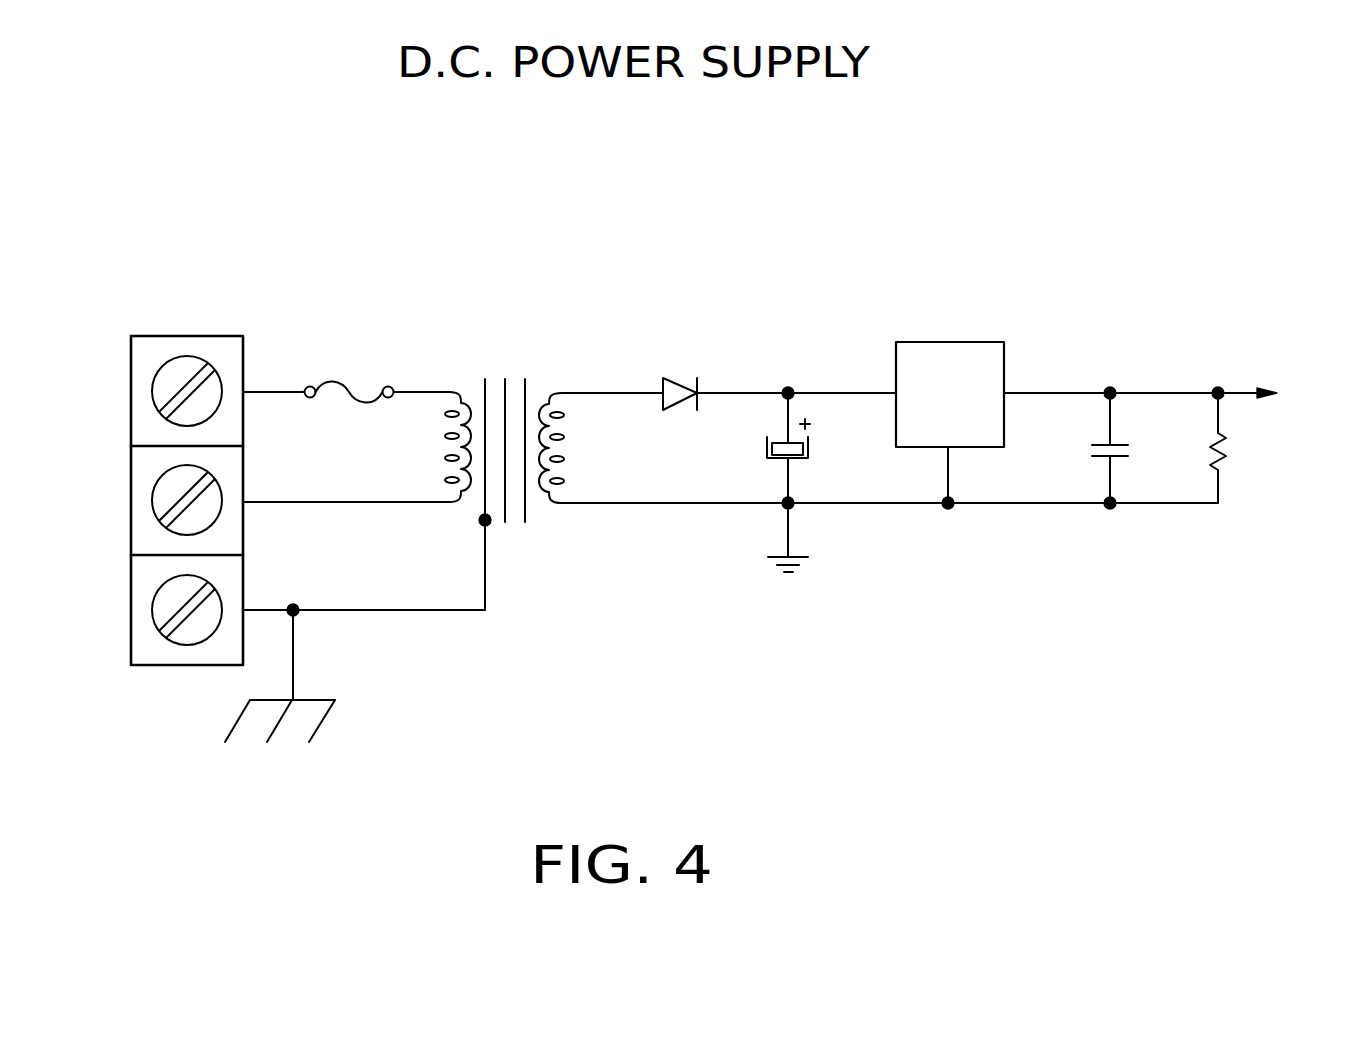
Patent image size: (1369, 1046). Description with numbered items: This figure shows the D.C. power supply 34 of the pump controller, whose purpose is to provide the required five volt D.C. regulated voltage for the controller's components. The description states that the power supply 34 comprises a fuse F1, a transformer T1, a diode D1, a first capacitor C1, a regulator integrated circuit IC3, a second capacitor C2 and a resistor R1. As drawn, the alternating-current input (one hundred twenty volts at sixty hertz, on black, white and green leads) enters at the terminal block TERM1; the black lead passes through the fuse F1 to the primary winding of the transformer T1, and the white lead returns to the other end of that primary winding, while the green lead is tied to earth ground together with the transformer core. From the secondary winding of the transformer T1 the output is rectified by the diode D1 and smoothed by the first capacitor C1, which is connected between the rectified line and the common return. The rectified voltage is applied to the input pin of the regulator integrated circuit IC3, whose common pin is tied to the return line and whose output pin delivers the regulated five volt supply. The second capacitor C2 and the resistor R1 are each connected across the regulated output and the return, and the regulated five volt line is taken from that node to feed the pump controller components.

The power supply 34 is at (620, 256).
The terminal TERM1 is at (187, 478).
The fuse F1 is at (349, 372).
The transformer T1 is at (504, 432).
The diode D1 is at (677, 395).
The capacitor C1 is at (755, 482).
The regulator IC3 is at (953, 422).
The capacitor C2 is at (1079, 448).
The resistor R1 is at (1256, 450).